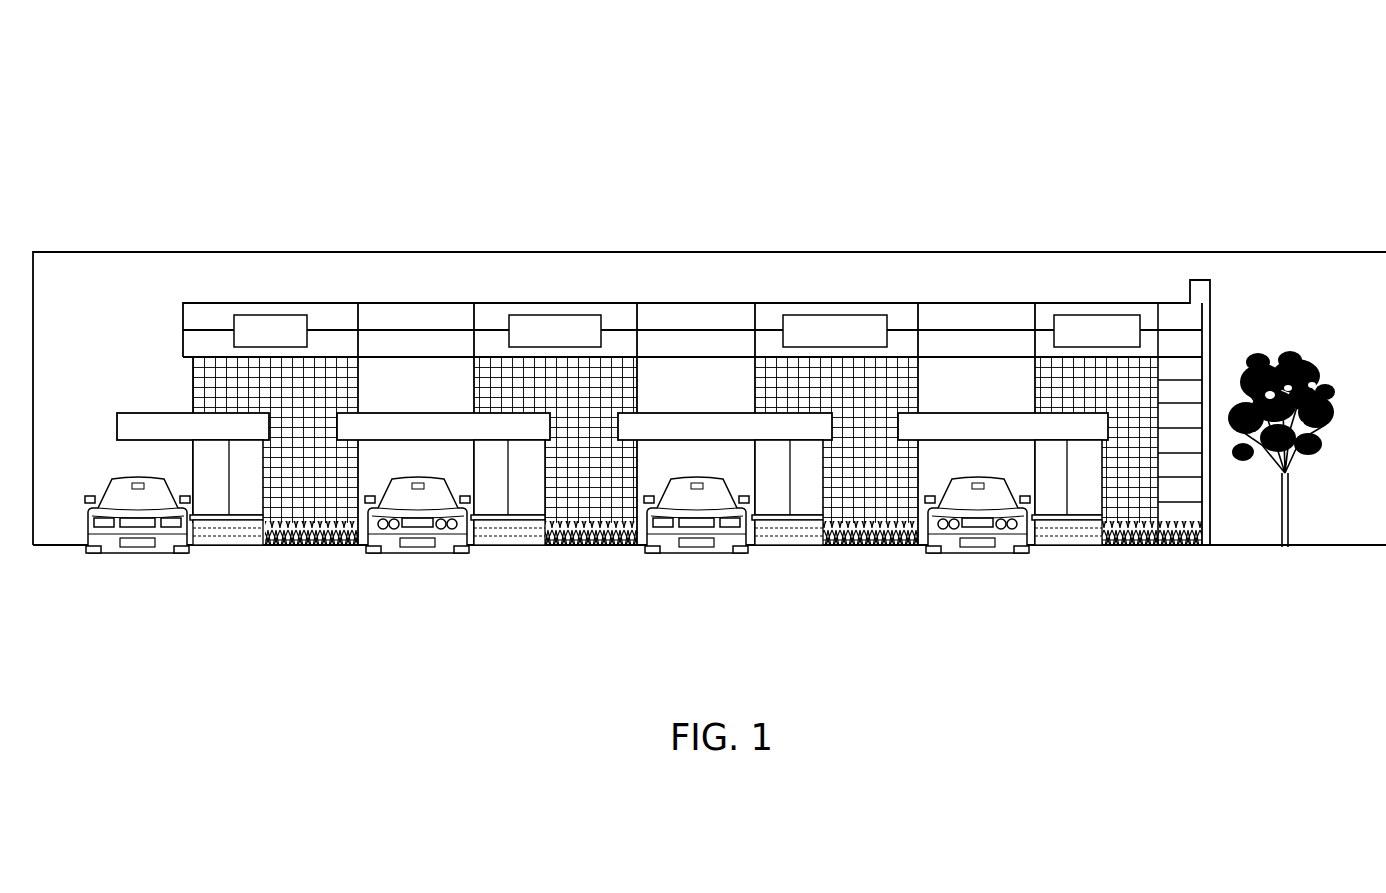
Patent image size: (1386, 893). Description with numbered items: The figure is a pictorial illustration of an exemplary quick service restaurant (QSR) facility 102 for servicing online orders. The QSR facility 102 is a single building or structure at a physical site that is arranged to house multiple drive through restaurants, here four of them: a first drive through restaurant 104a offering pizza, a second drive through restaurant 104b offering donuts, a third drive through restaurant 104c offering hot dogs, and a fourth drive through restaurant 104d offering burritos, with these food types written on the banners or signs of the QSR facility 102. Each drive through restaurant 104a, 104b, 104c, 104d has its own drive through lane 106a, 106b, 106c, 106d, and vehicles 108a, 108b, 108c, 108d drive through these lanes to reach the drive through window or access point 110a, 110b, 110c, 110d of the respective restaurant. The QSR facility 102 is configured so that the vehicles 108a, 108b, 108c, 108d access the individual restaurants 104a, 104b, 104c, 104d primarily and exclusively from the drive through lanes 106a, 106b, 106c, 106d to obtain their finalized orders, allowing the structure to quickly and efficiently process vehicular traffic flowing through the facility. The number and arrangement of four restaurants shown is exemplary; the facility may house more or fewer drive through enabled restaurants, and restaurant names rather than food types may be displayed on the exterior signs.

The quick service restaurant (QSR) facility 102 is at (165, 92).
The first drive through restaurant 104a is at (296, 292).
The second drive through restaurant 104b is at (566, 292).
The third drive through restaurant 104c is at (832, 292).
The fourth drive through restaurant 104d is at (1092, 292).
The drive through lane 106a is at (106, 536).
The drive through lane 106b is at (383, 536).
The drive through lane 106c is at (666, 536).
The drive through lane 106d is at (947, 536).
The vehicle 108a is at (162, 561).
The vehicle 108b is at (440, 561).
The vehicle 108c is at (720, 561).
The vehicle 108d is at (1005, 561).
The drive through window or access point 110a is at (238, 528).
The drive through window or access point 110b is at (520, 528).
The drive through window or access point 110c is at (781, 528).
The drive through window or access point 110d is at (1081, 528).